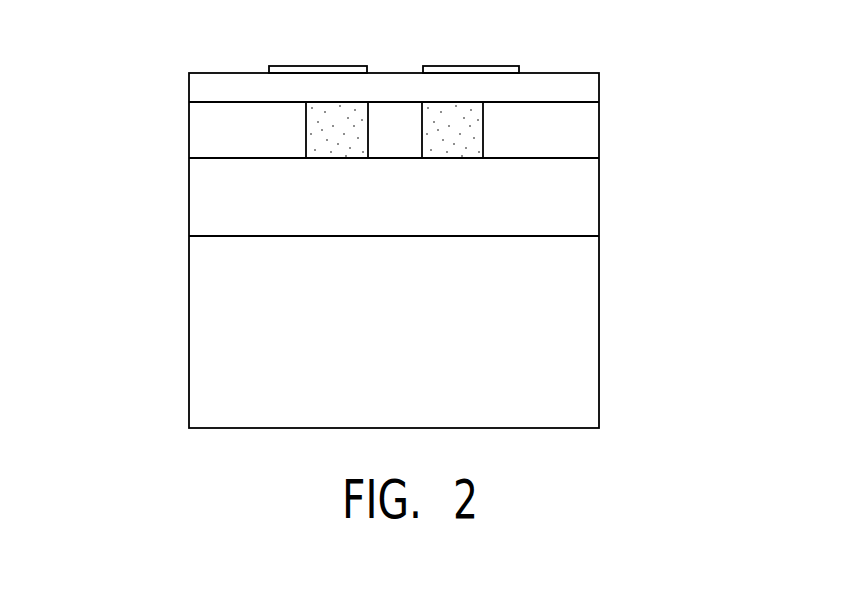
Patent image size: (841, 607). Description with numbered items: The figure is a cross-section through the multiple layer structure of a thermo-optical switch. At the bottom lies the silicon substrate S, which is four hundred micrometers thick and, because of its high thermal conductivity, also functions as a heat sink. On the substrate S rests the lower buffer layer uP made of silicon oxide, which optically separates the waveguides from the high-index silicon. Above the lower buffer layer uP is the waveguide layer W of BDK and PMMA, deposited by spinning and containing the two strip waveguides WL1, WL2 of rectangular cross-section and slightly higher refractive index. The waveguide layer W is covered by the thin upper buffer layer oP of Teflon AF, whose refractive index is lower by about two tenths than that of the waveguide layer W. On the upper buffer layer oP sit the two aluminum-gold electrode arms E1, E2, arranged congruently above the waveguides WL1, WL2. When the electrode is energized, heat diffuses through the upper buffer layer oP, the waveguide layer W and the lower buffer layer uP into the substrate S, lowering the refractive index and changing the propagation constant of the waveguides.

The upper buffer layer oP is at (203, 88).
The electrode arm E1 is at (288, 71).
The electrode arm E2 is at (500, 71).
The waveguide layer W is at (203, 148).
The waveguide WL1 is at (315, 127).
The waveguide WL2 is at (467, 127).
The lower buffer layer uP is at (588, 209).
The silicon substrate S is at (582, 378).